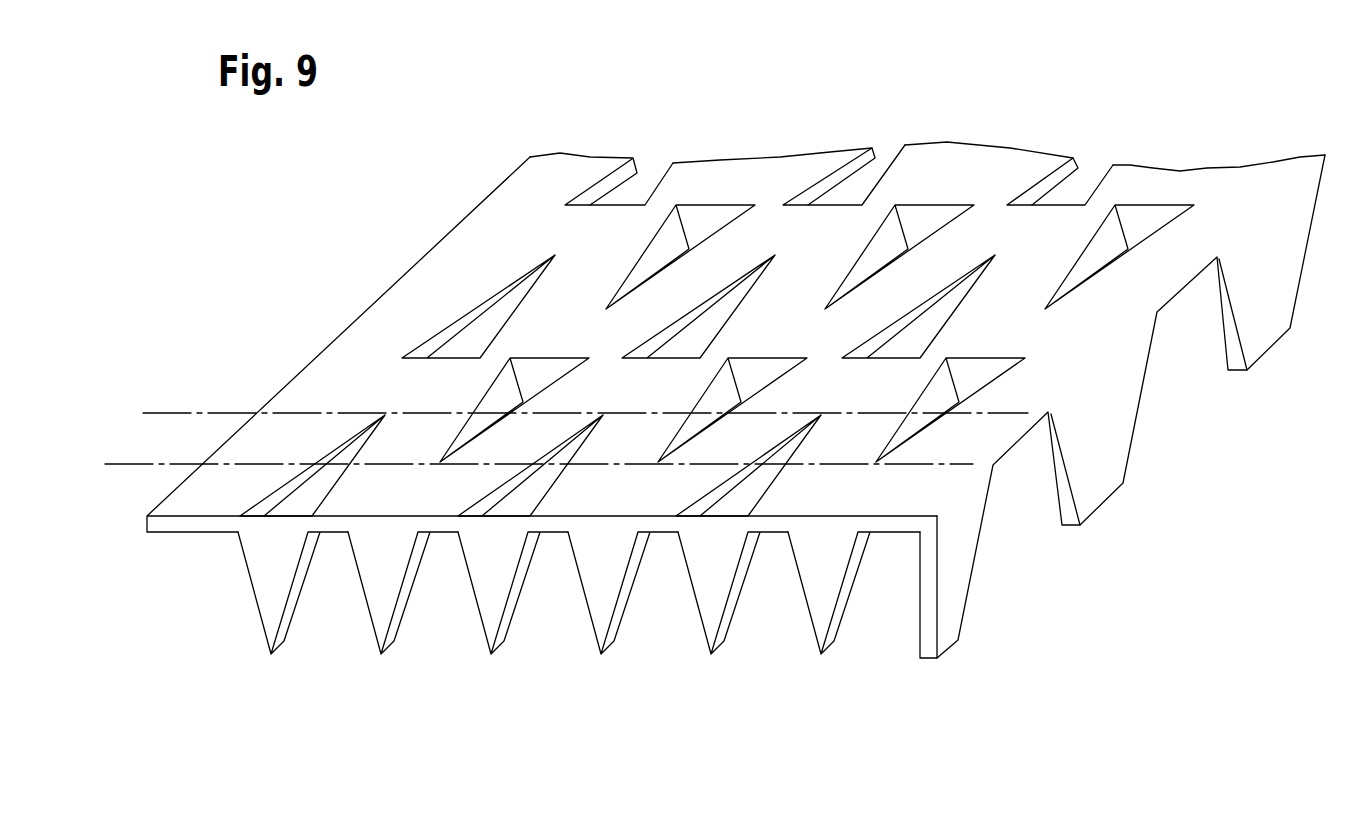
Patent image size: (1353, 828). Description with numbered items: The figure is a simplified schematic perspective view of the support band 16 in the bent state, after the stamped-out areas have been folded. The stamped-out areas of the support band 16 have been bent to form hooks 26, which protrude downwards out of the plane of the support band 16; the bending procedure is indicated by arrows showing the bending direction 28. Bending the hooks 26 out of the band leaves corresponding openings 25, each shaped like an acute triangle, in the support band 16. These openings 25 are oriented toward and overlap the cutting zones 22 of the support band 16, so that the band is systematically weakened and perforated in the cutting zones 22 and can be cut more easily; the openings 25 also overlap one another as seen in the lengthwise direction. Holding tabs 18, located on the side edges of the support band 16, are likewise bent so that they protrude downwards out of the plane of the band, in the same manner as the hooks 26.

The support band 16 is at (1192, 132).
The holding tabs 18 is at (1093, 413).
The cutting zones 22 is at (247, 445).
The openings 25 is at (500, 388).
The hooks 26 is at (268, 578).
The bending direction 28 is at (782, 535).